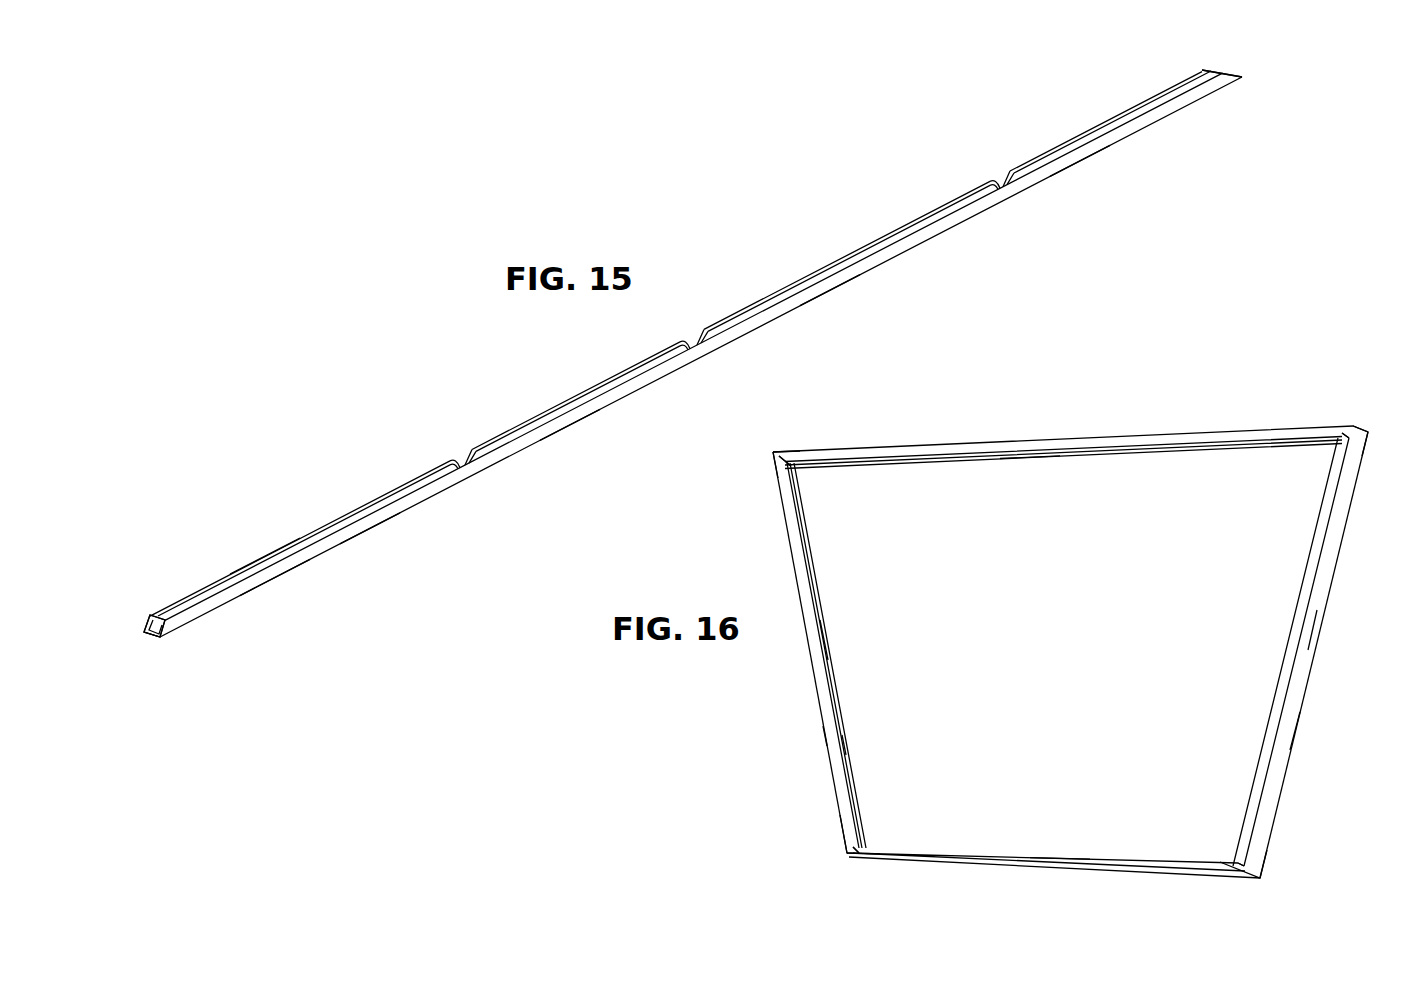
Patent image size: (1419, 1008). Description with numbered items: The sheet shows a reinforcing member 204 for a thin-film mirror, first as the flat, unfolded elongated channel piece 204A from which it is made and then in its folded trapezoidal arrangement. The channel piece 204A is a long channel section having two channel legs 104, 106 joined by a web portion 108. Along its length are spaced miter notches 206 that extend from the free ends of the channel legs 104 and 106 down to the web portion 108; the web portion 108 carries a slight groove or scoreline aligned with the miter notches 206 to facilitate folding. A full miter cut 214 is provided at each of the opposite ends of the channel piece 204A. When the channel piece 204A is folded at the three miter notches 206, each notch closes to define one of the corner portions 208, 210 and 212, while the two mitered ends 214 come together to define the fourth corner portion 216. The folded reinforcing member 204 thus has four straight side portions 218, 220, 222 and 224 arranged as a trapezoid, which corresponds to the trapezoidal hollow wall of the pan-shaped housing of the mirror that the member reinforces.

In FIG. 16, the reinforcing member 204 is at (1118, 405).
In FIG. 15, the elongated channel piece 204A is at (795, 200).
In FIG. 15, the miter notches 206 is at (455, 452).
In FIG. 16, the miter notches 206 is at (788, 465).
In FIG. 16, the corner portion 208 is at (773, 452).
In FIG. 16, the corner portion 210 is at (845, 854).
In FIG. 16, the corner portion 212 is at (1262, 880).
In FIG. 15, the full miter cut 214 is at (1228, 74).
In FIG. 16, the full miter cut 214 is at (1342, 436).
In FIG. 16, the corner portion 216 is at (1369, 430).
In FIG. 15, the side portion 218 is at (372, 531).
In FIG. 16, the side portion 218 is at (1032, 457).
In FIG. 15, the side portion 220 is at (826, 295).
In FIG. 16, the side portion 220 is at (1063, 853).
In FIG. 15, the side portion 222 is at (568, 430).
In FIG. 16, the side portion 222 is at (1292, 629).
In FIG. 15, the side portion 224 is at (1080, 165).
In FIG. 16, the side portion 224 is at (838, 639).
In FIG. 15, the channel leg 104 is at (264, 560).
In FIG. 16, the channel leg 104 is at (848, 747).
In FIG. 15, the channel leg 106 is at (273, 581).
In FIG. 16, the channel leg 106 is at (822, 736).
In FIG. 15, the web portion 108 is at (144, 634).
In FIG. 16, the web portion 108 is at (1297, 730).